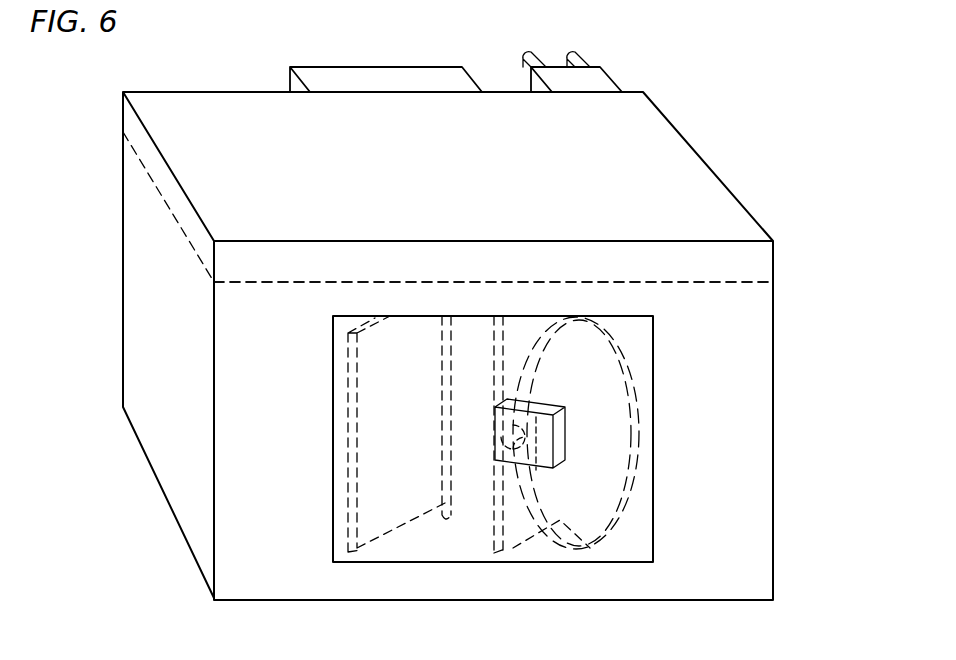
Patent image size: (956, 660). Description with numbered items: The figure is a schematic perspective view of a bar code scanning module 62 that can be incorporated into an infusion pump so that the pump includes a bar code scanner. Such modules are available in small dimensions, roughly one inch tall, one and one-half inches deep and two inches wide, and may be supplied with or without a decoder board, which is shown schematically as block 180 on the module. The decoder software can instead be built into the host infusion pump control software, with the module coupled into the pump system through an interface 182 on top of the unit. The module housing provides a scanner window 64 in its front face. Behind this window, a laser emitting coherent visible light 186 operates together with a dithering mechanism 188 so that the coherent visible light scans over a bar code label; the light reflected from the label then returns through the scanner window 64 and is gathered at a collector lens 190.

The bar code scanning module 62 is at (690, 165).
The scanner window 64 is at (448, 563).
The decoder board 180 is at (763, 270).
The interface 182 is at (358, 66).
The laser emitting coherent visible light 186 is at (531, 552).
The dithering mechanism 188 is at (386, 545).
The collector lens 190 is at (594, 560).